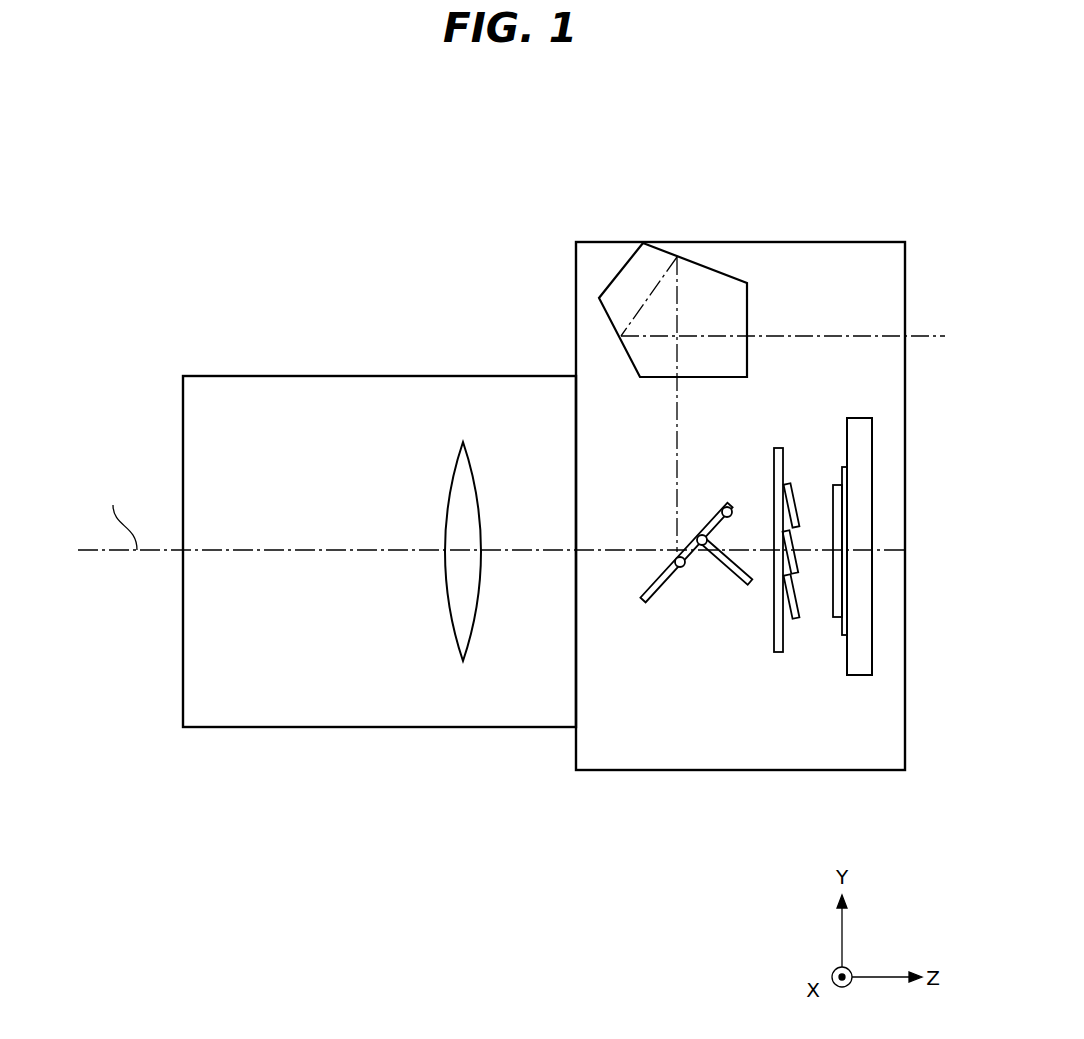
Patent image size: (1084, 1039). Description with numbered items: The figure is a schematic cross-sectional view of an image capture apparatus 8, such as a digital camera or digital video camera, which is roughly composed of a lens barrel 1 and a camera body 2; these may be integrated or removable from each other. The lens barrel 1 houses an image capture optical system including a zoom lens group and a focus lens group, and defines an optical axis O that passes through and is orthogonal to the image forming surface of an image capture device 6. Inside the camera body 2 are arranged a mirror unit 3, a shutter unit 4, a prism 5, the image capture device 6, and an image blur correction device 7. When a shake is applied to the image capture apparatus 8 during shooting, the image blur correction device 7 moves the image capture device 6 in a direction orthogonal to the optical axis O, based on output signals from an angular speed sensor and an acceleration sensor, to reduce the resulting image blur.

The lens barrel 1 is at (232, 376).
The camera body 2 is at (601, 242).
The mirror unit 3 is at (637, 608).
The shutter unit 4 is at (778, 652).
The prism 5 is at (717, 271).
The image capture device 6 is at (842, 635).
The image blur correction device 7 is at (863, 675).
The image capture apparatus 8 is at (471, 152).